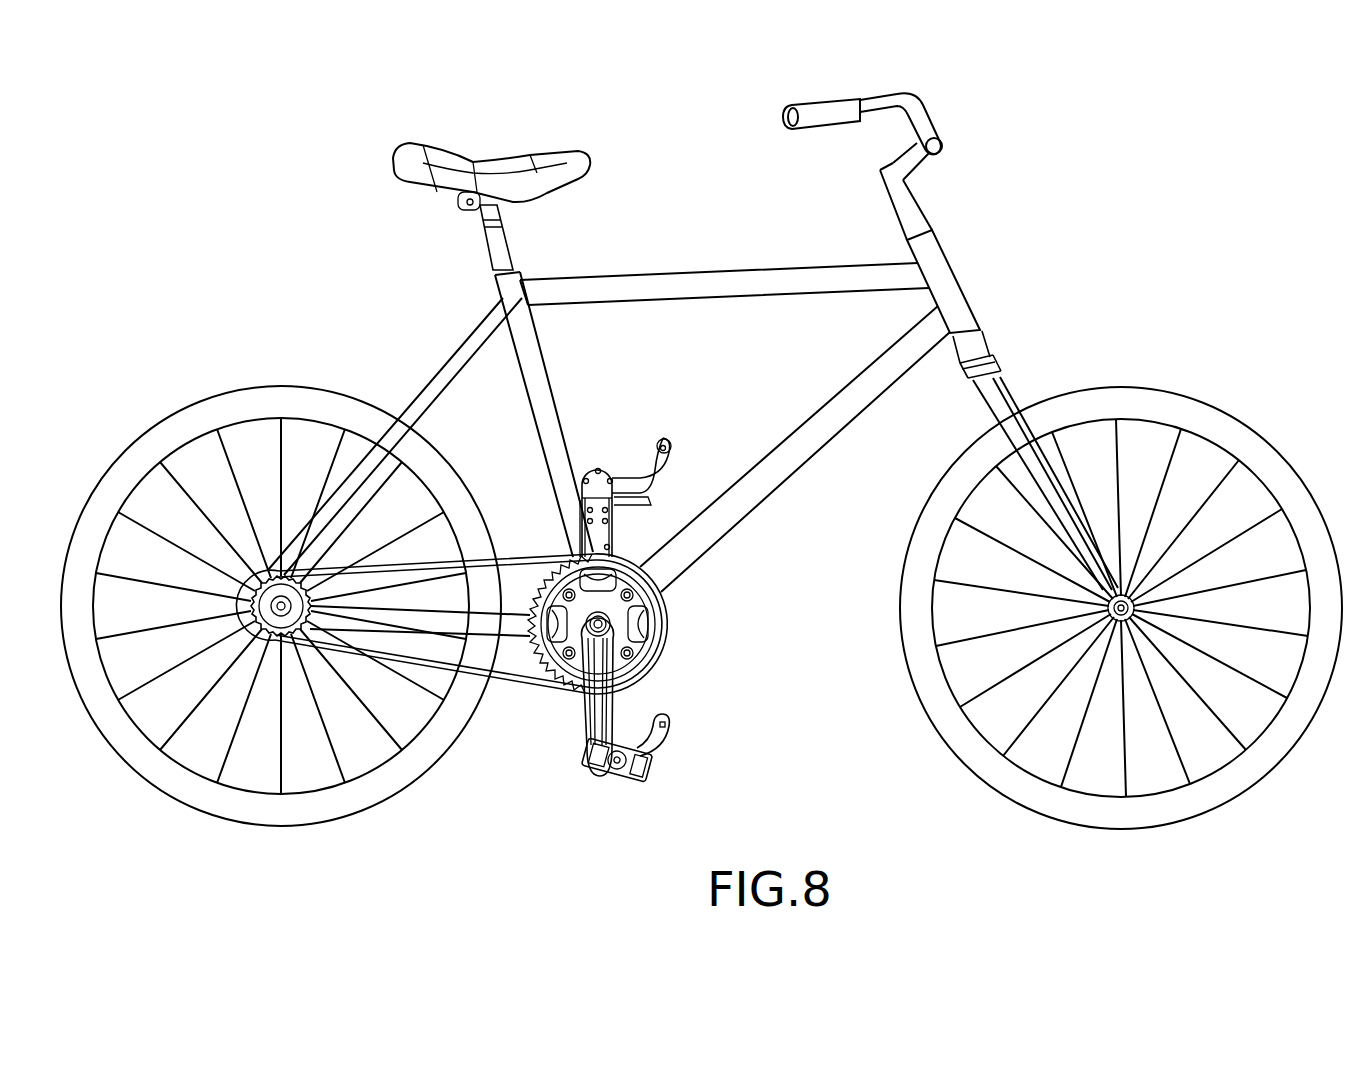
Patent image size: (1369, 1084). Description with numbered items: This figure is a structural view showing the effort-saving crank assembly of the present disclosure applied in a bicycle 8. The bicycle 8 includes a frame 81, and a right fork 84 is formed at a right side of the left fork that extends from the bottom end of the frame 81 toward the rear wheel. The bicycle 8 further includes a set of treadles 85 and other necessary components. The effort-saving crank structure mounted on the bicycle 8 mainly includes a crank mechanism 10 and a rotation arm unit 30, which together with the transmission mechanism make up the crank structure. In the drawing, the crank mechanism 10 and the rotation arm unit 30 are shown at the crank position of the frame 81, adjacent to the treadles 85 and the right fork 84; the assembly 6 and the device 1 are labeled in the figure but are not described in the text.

The bicycle 8 is at (995, 295).
The frame 81 is at (746, 268).
The right fork 84 is at (512, 626).
The crank set 6 is at (650, 604).
The crank mechanism 10 is at (595, 458).
The pedal device 1 is at (705, 420).
The rotation arm unit 30 is at (666, 430).
The treadles 85 is at (626, 782).